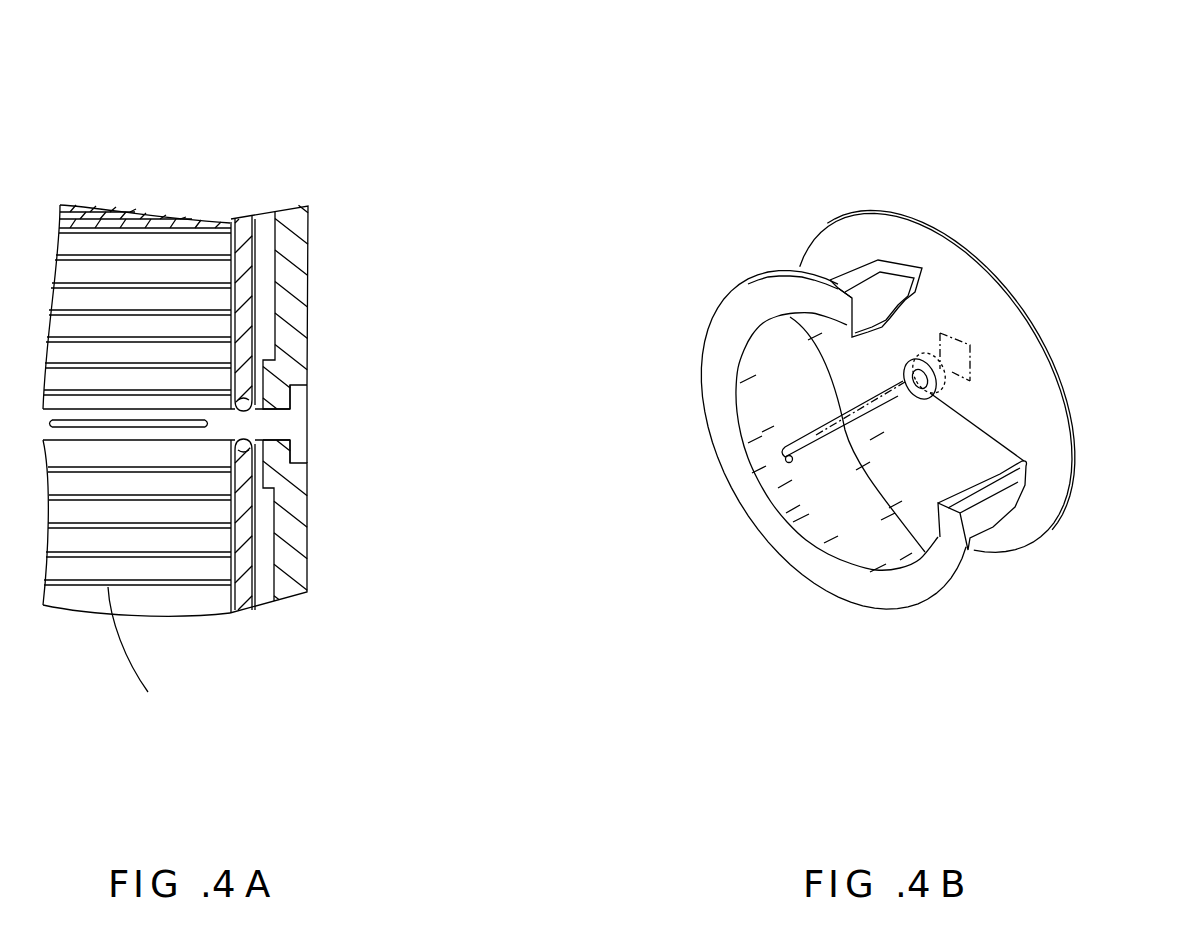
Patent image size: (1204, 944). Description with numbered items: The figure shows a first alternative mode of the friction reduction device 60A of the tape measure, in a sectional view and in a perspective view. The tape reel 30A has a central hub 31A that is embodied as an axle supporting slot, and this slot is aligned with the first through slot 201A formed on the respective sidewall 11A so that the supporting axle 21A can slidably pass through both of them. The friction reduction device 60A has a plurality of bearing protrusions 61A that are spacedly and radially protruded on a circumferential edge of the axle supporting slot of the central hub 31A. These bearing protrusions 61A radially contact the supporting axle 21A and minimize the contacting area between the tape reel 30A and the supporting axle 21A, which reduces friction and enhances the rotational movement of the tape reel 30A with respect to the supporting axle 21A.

In FIG. 4A, the sidewall 11A is at (293, 511).
In FIG. 4A, the supporting axle 21A is at (122, 432).
In FIG. 4B, the supporting axle 21A is at (808, 435).
In FIG. 4A, the tape reel 30A is at (246, 260).
In FIG. 4B, the tape reel 30A is at (913, 243).
In FIG. 4A, the central hub 31A is at (270, 444).
In FIG. 4B, the central hub 31A is at (947, 357).
In FIG. 4A, the friction reduction device 60A is at (497, 327).
In FIG. 4A, the bearing protrusions 61A is at (248, 415).
In FIG. 4B, the bearing protrusions 61A is at (1024, 465).
In FIG. 4A, the first through slot 201A is at (318, 392).